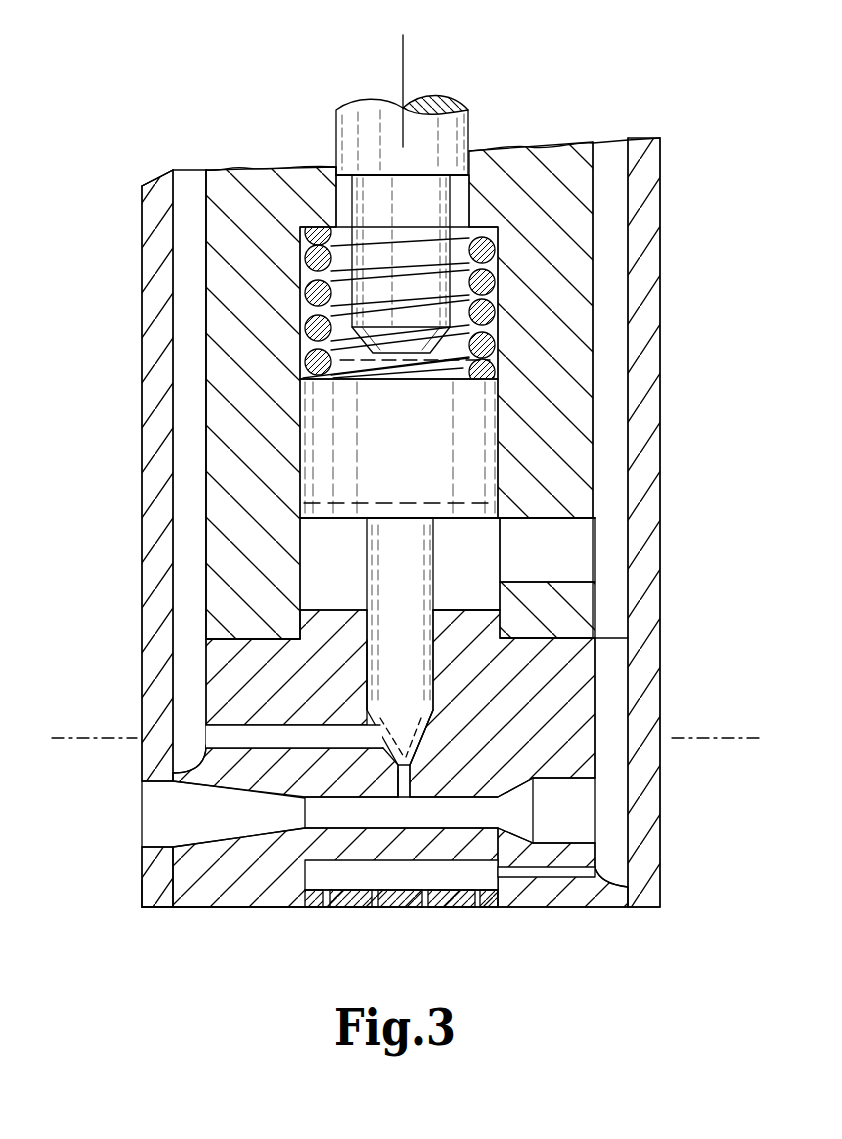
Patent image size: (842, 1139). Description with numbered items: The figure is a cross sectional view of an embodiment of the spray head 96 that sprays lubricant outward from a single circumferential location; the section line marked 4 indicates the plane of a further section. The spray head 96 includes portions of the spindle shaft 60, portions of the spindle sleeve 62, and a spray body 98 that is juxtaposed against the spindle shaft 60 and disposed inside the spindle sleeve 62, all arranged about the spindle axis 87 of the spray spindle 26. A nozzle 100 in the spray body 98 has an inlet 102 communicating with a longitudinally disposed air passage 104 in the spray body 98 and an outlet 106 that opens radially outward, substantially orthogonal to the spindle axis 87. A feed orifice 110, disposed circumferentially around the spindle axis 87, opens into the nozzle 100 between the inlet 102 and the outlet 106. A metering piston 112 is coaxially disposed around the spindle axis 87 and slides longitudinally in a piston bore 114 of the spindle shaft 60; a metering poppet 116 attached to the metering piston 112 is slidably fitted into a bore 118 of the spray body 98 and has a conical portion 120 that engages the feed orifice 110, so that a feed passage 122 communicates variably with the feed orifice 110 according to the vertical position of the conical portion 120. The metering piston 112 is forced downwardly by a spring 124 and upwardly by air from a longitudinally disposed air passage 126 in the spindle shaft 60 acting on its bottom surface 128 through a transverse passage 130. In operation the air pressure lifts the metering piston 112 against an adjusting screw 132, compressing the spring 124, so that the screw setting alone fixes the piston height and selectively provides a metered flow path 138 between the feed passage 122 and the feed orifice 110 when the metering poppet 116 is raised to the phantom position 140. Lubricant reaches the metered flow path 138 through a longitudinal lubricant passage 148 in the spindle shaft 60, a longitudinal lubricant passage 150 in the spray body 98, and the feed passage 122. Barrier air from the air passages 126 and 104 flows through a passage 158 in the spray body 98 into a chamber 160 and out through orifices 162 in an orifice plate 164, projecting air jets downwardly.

The spray spindle 26 is at (205, 88).
The spindle axis 87 is at (406, 52).
The spindle sleeve 62 is at (152, 158).
The spindle shaft 60 is at (238, 153).
The adjusting screw 132 is at (474, 120).
The spring 124 is at (300, 291).
The lubricant passage 148 is at (163, 422).
The piston bore 114 is at (300, 423).
The metering piston 112 is at (384, 435).
The air passage 126 is at (606, 428).
The bottom surface 128 is at (448, 520).
The metering poppet 116 is at (367, 575).
The transverse passage 130 is at (585, 555).
The bore 118 is at (370, 678).
The air passage 104 is at (618, 672).
The lubricant passage 150 is at (190, 703).
The feed passage 122 is at (266, 733).
The conical portion 120 is at (432, 711).
The phantom position 140 is at (386, 740).
The feed orifice 110 is at (412, 780).
The metered flow path 138 is at (398, 773).
The outlet 106 is at (143, 812).
The inlet 102 is at (598, 806).
The nozzle 100 is at (443, 826).
The chamber 160 is at (303, 908).
The orifices 162 is at (378, 908).
The orifice plate 164 is at (460, 908).
The passage 158 is at (578, 880).
The spray body 98 is at (222, 930).
The spray head 96 is at (165, 968).
The section line 4- 4 is at (760, 766).